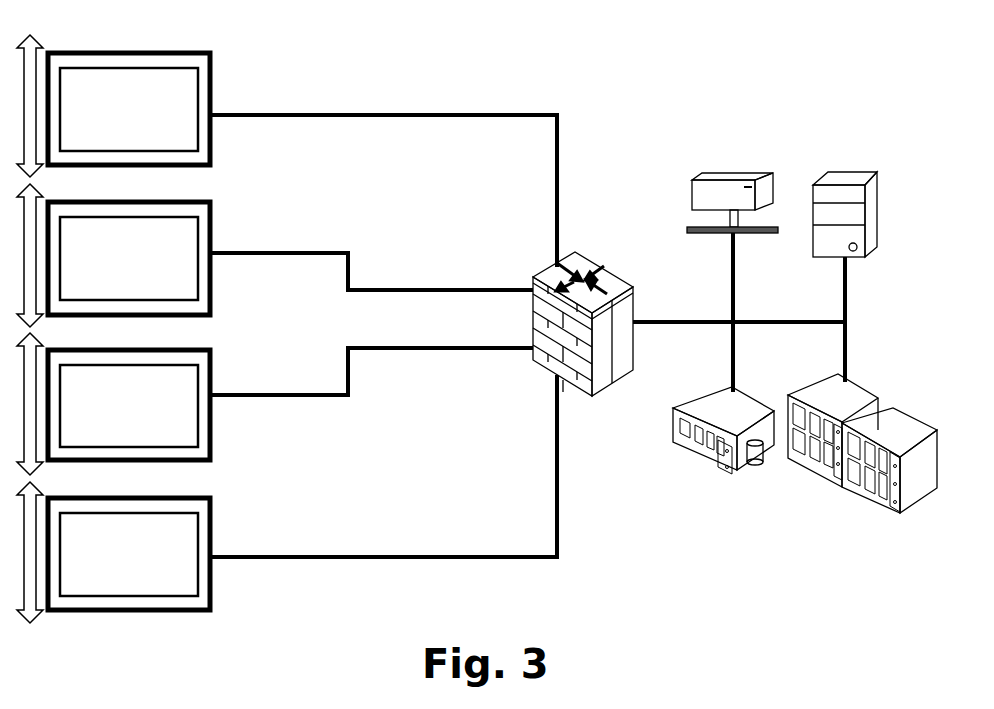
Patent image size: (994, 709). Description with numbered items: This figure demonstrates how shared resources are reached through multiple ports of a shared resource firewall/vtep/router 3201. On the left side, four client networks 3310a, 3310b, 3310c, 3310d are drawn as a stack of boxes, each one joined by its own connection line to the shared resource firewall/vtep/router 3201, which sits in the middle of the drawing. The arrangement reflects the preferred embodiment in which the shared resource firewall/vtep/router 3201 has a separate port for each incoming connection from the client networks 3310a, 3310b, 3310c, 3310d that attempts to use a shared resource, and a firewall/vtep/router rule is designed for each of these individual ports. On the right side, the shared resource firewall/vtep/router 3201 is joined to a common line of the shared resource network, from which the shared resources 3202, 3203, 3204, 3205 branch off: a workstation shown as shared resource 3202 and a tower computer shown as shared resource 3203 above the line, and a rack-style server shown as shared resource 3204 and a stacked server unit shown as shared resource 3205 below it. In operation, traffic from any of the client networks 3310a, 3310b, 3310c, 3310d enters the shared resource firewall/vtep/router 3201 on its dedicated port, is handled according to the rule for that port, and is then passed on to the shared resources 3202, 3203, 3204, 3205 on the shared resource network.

The client network 3310a is at (129, 109).
The client network 3310b is at (129, 258).
The client network 3310c is at (129, 405).
The client network 3310d is at (129, 554).
The shared resource firewall/vtep/router 3201 is at (583, 340).
The shared resource 3202 is at (732, 170).
The shared resource 3203 is at (845, 184).
The shared resource 3204 is at (723, 466).
The shared resource 3205 is at (862, 459).